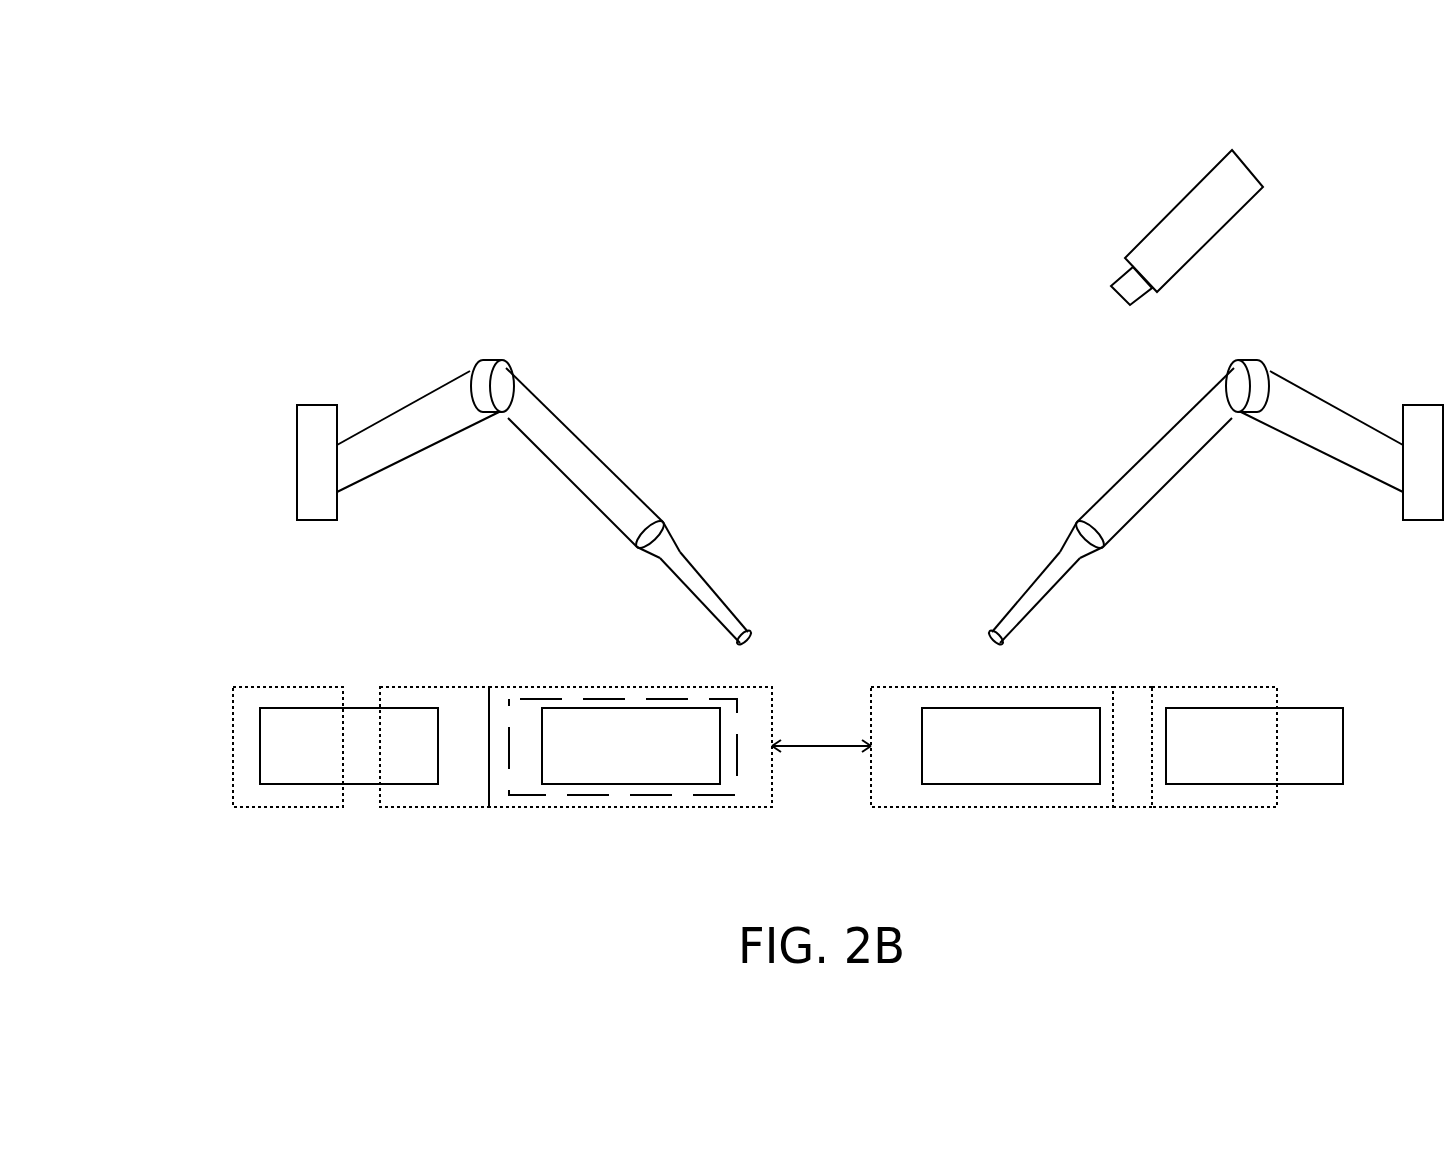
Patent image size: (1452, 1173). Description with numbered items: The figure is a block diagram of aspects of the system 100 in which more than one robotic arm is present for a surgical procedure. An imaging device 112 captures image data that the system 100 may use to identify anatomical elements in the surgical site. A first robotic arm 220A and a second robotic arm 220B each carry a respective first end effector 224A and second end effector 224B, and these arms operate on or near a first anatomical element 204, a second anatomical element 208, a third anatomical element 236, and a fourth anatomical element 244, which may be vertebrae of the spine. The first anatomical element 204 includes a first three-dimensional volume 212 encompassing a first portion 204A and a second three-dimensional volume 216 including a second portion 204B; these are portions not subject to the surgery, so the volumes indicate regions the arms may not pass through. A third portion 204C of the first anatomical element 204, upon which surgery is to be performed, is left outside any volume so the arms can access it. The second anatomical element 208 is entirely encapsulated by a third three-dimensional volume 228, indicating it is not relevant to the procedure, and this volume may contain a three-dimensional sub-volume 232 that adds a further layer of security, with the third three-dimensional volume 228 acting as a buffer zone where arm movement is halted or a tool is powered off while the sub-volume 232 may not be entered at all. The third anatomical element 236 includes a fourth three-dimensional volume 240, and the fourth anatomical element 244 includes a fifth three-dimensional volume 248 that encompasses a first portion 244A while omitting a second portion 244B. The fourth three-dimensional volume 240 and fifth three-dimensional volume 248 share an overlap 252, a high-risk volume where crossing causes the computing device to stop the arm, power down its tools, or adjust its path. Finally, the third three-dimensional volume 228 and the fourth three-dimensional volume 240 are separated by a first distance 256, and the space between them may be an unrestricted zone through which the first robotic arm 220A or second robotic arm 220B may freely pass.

The system 100 is at (468, 150).
The imaging device 112 is at (1232, 150).
The first robotic arm 220A is at (1290, 385).
The second robotic arm 220B is at (531, 386).
The first end effector 224A is at (1048, 565).
The second end effector 224B is at (710, 588).
The first 3D volume 212 is at (233, 687).
The second 3D volume 216 is at (380, 687).
The third 3D volume 228 is at (772, 687).
The fourth 3D volume 240 is at (871, 687).
The fifth 3D volume 248 is at (1277, 687).
The overlap 252 is at (1132, 717).
The first anatomical element 204 is at (260, 784).
The first portion 204A is at (283, 746).
The second portion 204B is at (415, 757).
The third portion 204C is at (358, 733).
The second anatomical element 208 is at (542, 784).
The 3D sub-volume 232 is at (675, 795).
The third anatomical element 236 is at (922, 784).
The fourth anatomical element 244 is at (1166, 784).
The first portion 244A is at (1258, 767).
The second portion 244B is at (1325, 748).
The first distance 256 is at (832, 748).